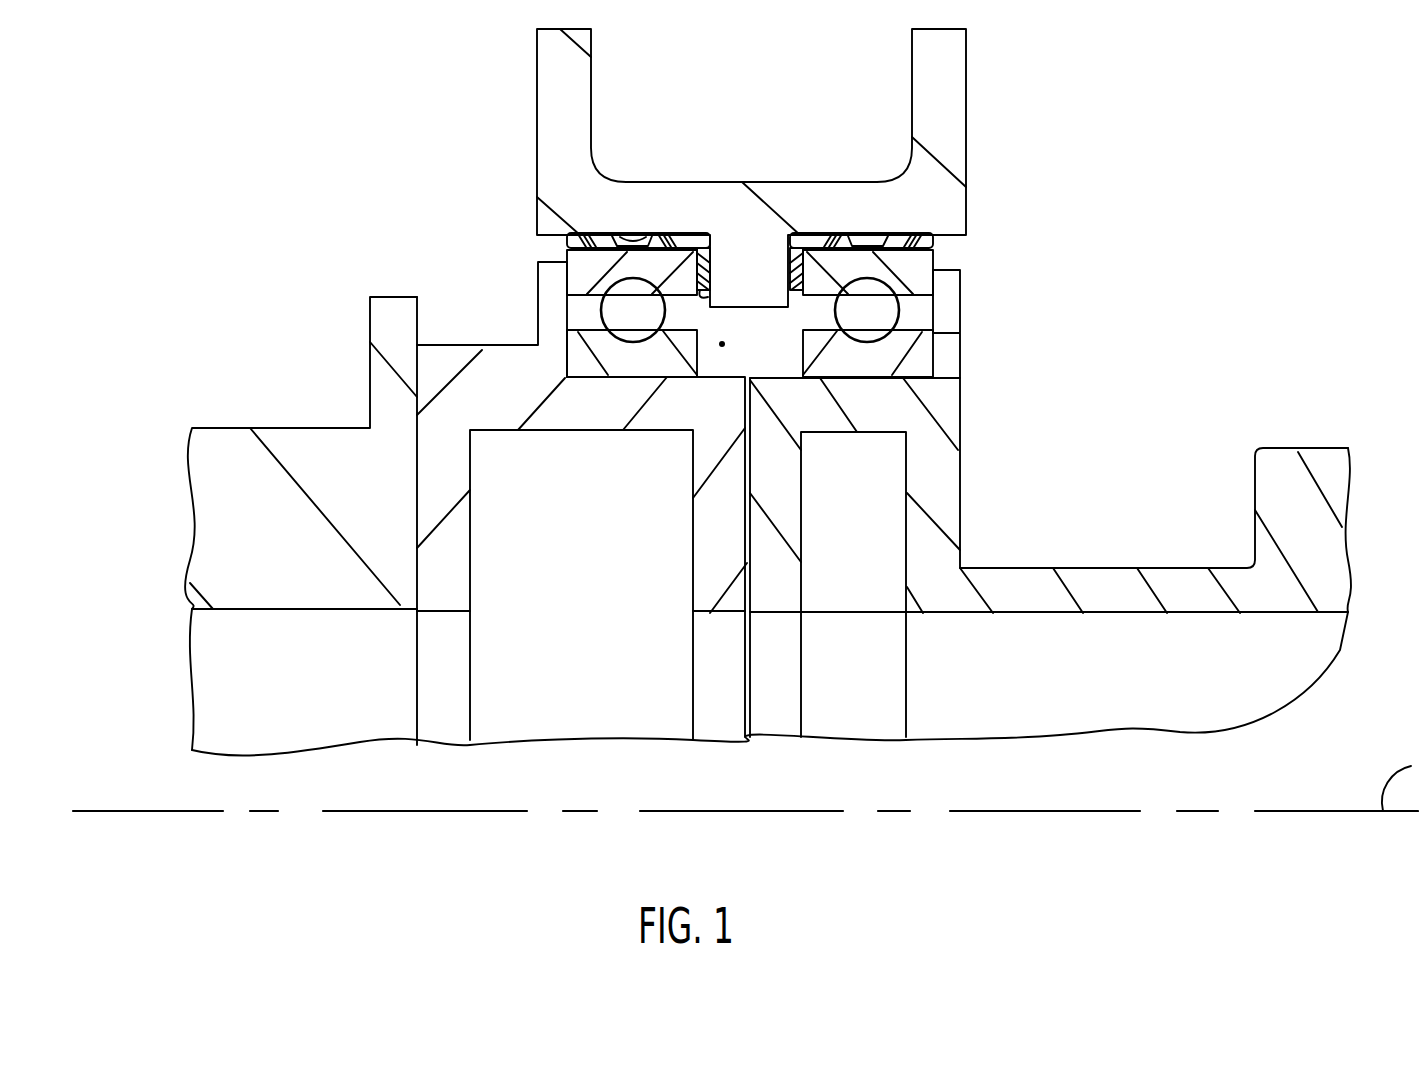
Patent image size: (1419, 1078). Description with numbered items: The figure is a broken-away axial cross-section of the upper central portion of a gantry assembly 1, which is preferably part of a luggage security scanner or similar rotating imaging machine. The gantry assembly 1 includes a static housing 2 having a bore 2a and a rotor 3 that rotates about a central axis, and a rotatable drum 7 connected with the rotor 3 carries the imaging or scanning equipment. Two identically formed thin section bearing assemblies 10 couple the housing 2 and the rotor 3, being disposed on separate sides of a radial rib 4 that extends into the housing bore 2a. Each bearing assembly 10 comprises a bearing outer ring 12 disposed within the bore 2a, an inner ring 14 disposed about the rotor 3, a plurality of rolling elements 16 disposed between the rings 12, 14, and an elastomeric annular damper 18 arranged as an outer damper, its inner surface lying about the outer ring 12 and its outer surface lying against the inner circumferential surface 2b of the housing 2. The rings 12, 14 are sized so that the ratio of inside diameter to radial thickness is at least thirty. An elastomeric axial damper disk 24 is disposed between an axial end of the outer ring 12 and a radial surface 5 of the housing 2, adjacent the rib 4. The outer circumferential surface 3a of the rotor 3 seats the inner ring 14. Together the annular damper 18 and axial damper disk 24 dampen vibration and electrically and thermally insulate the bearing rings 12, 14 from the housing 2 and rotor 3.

The gantry assembly 1 is at (257, 105).
The static housing 2 is at (510, 86).
The bore 2a is at (722, 347).
The inner circumferential surface 2b is at (633, 241).
The rotor 3 is at (983, 428).
The outer circumferential surface 3a is at (690, 368).
The radial rib 4 is at (752, 310).
The radial surface 5 is at (709, 295).
The rotatable drum 7 is at (293, 438).
The thin section bearing assembly 10 is at (741, 292).
The bearing outer ring 12 is at (564, 277).
The inner ring 14 is at (566, 355).
The rolling elements 16 is at (627, 340).
The elastomeric annular damper 18 is at (592, 231).
The elastomeric axial damper disk 24 is at (709, 266).